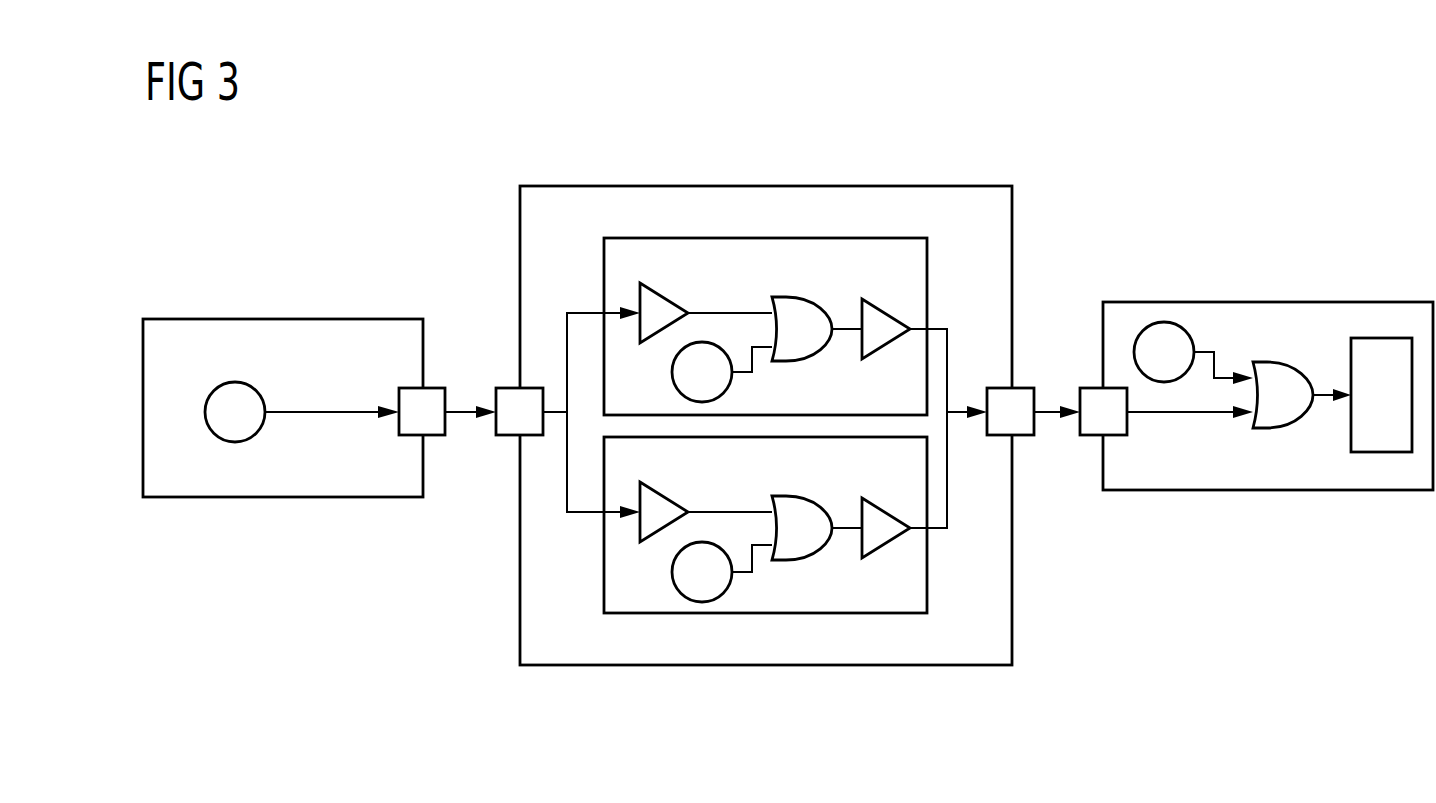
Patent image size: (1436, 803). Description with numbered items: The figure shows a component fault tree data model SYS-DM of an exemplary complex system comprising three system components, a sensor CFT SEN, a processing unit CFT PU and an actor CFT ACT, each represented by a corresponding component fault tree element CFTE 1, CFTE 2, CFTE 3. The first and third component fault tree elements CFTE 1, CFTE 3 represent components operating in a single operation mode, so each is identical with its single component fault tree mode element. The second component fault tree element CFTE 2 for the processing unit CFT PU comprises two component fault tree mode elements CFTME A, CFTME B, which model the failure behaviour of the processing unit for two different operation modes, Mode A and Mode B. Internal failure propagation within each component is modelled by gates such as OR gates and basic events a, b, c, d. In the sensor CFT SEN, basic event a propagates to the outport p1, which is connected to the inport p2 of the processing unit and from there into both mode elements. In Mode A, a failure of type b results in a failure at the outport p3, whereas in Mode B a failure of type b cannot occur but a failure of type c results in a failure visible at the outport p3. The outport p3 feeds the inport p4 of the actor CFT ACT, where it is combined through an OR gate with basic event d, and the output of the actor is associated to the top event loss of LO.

The component fault tree data model SYS-DM is at (410, 132).
The first component fault tree element CFTE 1 is at (282, 319).
The second component fault tree element CFTE 2 is at (682, 186).
The third component fault tree element CFTE 3 is at (1268, 302).
The sensor CFT SEN is at (283, 408).
The processing unit CFT PU is at (765, 429).
The actor CFT ACT is at (1256, 396).
The component fault tree mode element A CFTME A is at (847, 238).
The component fault tree mode element B CFTME B is at (767, 613).
The operation mode A Mode A is at (765, 326).
The operation mode B Mode B is at (765, 525).
The outport of the sensor component p1 is at (422, 411).
The inport of the processing unit p2 is at (519, 411).
The outport of the processing unit p3 is at (1010, 411).
The inport of the actor component p4 is at (1103, 411).
The basic event a is at (235, 412).
The basic event b is at (702, 372).
The basic event c is at (702, 572).
The basic event d is at (1164, 352).
The top event loss of LO is at (1381, 395).